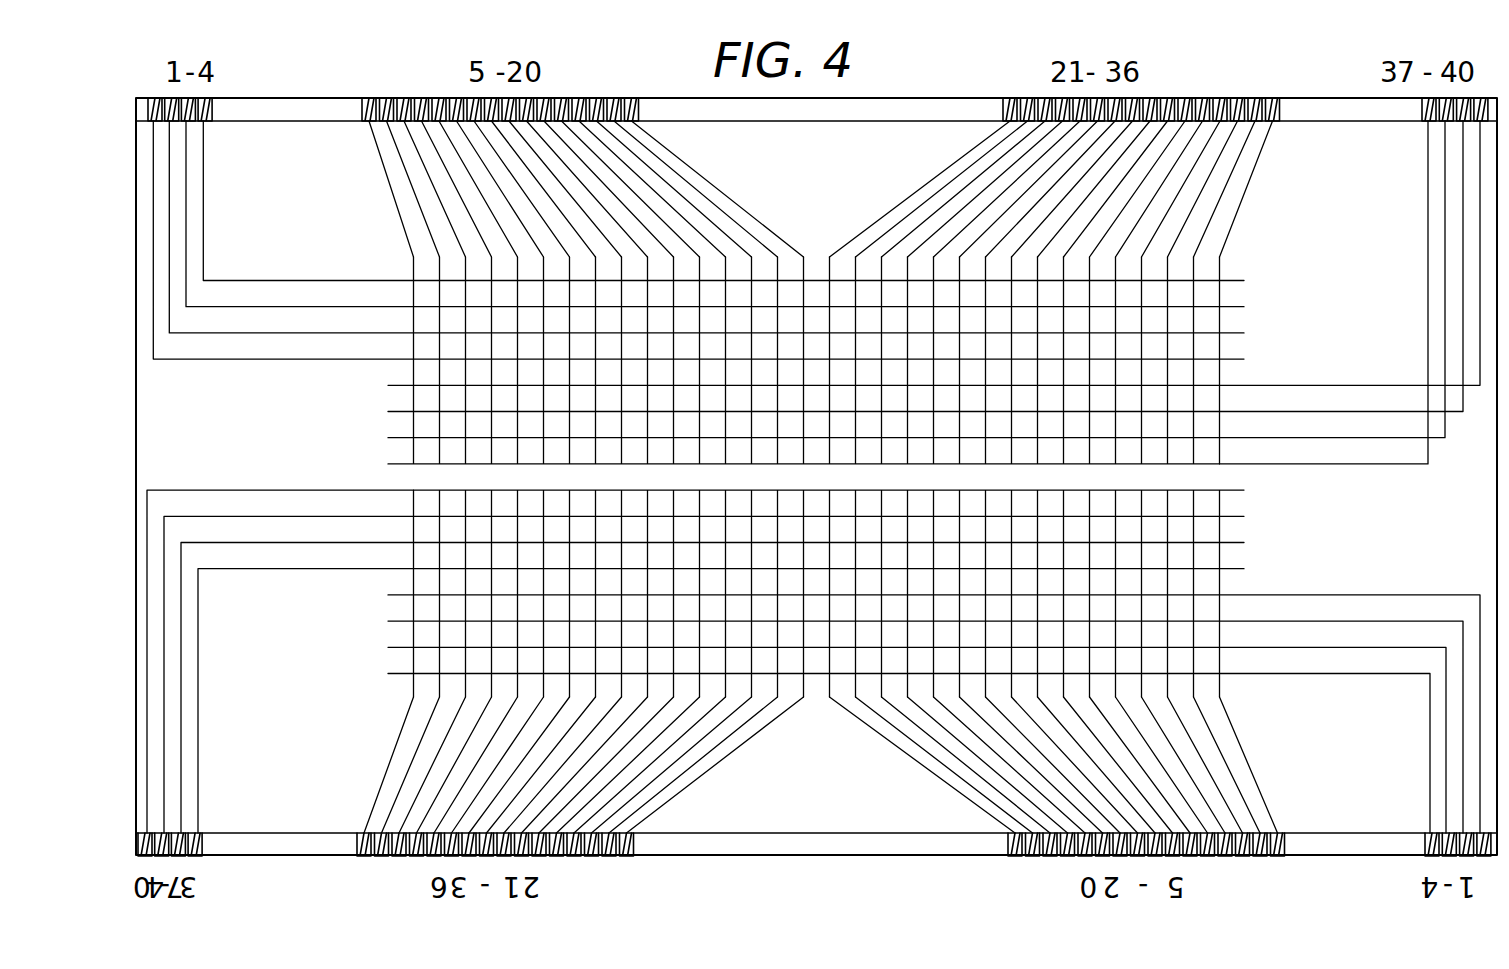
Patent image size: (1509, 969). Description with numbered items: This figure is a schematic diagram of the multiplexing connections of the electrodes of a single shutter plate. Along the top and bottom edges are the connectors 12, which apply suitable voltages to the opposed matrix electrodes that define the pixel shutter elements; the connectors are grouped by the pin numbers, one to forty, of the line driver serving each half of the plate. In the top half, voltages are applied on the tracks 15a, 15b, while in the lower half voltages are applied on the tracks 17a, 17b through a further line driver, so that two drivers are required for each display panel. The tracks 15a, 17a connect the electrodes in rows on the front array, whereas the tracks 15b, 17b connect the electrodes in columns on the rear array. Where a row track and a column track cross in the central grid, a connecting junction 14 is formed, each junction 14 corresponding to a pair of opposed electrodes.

The connectors 12 is at (358, 106).
The connecting junctions 14 is at (405, 272).
The tracks 15a is at (205, 198).
The tracks 15b is at (392, 192).
The tracks 17a is at (198, 778).
The tracks 17b is at (402, 732).